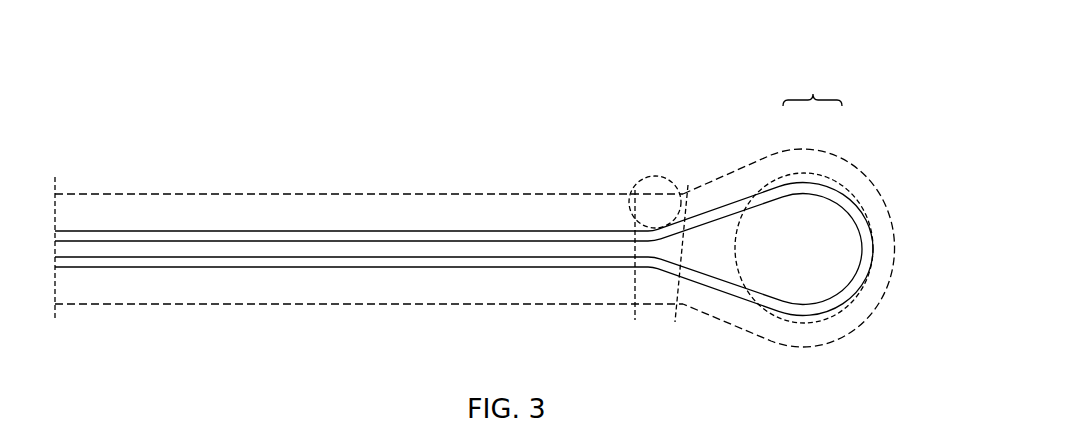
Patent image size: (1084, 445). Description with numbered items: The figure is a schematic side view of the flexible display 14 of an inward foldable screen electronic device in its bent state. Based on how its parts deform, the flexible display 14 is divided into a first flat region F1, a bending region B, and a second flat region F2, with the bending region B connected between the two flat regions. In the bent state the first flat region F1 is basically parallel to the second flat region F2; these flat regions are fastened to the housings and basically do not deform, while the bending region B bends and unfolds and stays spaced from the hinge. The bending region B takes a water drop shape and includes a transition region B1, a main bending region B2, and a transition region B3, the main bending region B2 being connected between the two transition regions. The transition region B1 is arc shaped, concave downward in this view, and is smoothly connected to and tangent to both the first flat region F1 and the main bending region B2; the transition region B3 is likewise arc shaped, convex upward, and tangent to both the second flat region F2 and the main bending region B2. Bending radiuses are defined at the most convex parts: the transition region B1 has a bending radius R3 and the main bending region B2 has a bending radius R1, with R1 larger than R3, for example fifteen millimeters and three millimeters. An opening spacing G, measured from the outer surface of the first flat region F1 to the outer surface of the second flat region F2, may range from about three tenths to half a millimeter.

The flexible display 14 is at (65, 62).
The first flat region F1 is at (369, 179).
The second flat region F2 is at (369, 323).
The opening spacing G is at (542, 233).
The bending radius of the transition region B1 R3 is at (656, 203).
The transition region B1 is at (718, 217).
The transition region B3 is at (669, 253).
The bending radius of the main bending region B2 R1 is at (805, 322).
The main bending region B2 is at (814, 230).
The bending region B is at (812, 87).